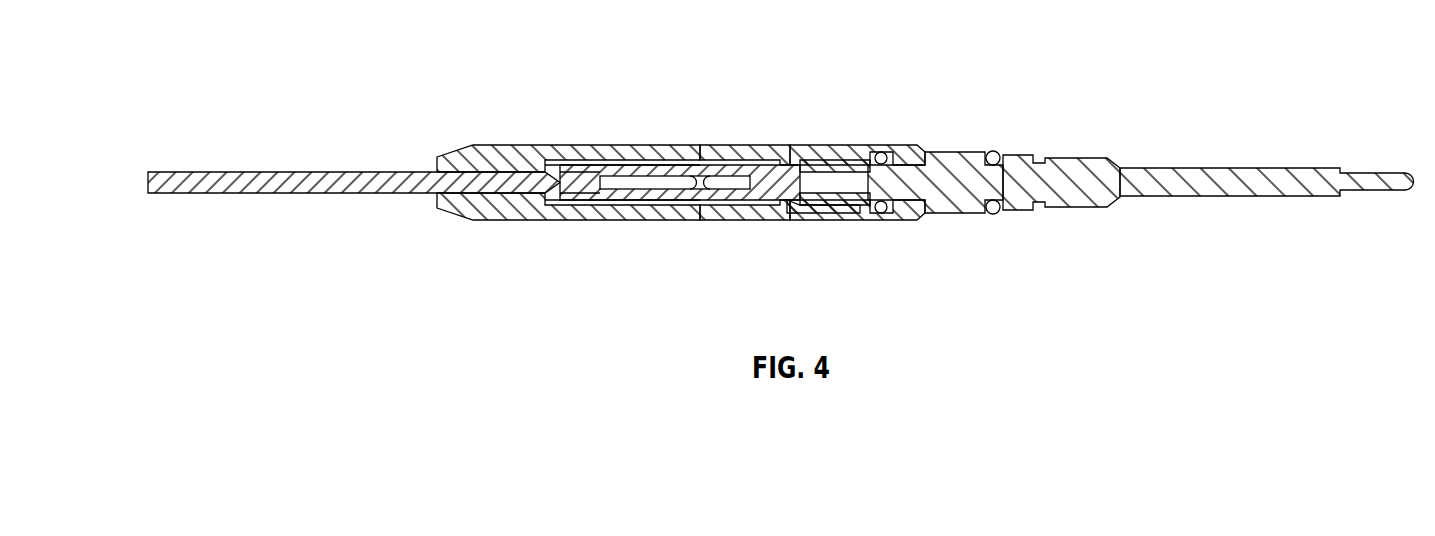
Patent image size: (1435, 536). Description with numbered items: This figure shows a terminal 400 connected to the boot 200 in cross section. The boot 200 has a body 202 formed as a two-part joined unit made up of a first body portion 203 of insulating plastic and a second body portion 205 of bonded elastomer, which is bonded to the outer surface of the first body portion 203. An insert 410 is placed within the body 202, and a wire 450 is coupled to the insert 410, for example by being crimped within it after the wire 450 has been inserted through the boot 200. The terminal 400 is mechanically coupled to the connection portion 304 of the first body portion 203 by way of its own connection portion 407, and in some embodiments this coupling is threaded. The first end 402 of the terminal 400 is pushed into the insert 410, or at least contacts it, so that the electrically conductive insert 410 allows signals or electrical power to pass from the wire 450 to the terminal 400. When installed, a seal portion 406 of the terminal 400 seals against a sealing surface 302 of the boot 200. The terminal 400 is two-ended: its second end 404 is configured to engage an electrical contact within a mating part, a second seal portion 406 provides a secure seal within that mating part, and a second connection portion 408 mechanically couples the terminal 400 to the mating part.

The terminal 400 is at (768, 173).
The boot 200 is at (802, 121).
The body 202 is at (716, 133).
The first body portion 203 is at (767, 131).
The second body portion 205 is at (488, 148).
The wire 450 is at (203, 198).
The first end 402 is at (758, 188).
The insert 410 is at (690, 206).
The connection portion 304 is at (812, 207).
The sealing surface 302 is at (897, 213).
The seal portion 406 is at (990, 150).
The connection portion 407 is at (829, 161).
The second connection portion 408 is at (1098, 202).
The second end 404 is at (1395, 173).